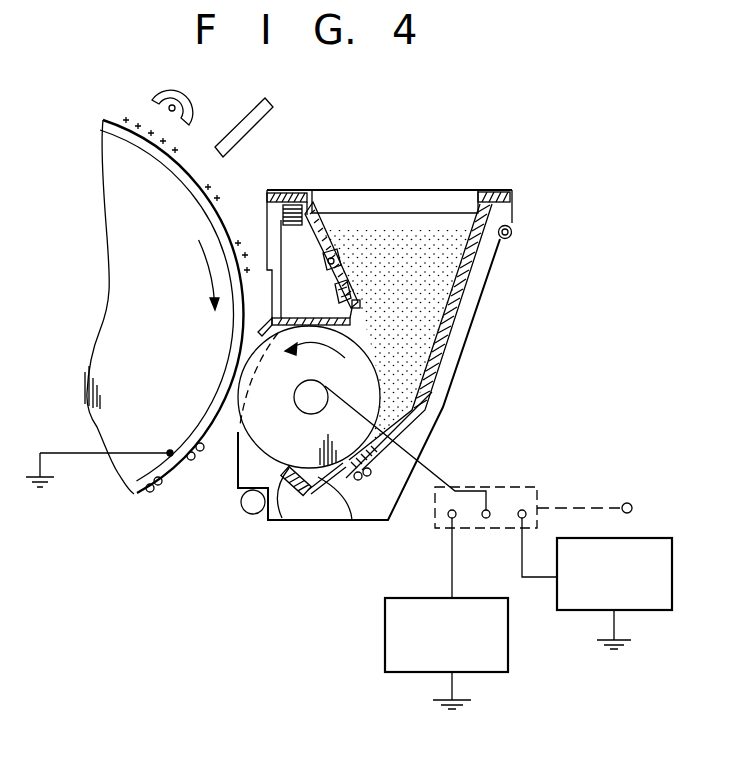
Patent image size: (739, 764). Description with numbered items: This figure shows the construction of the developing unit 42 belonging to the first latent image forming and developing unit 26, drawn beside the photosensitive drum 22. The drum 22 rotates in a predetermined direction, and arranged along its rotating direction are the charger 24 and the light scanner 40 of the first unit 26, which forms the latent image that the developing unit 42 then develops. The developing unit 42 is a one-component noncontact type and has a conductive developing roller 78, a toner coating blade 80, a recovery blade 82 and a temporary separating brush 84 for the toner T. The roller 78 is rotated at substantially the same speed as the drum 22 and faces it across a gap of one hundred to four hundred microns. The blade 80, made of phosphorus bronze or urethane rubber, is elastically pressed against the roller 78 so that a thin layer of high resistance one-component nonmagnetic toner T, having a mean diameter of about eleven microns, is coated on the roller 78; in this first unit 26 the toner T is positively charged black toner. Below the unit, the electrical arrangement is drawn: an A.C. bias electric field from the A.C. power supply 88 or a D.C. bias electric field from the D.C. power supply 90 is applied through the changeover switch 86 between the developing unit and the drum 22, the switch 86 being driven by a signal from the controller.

The photosensitive drum 22 is at (176, 466).
The charger 24 is at (194, 100).
The light scanner 40 is at (250, 120).
The first latent image forming and developing unit 26 is at (339, 164).
The toner T is at (437, 304).
The developing unit 42 is at (478, 336).
The toner coating blade 80 is at (368, 346).
The conductive developing roller 78 is at (322, 489).
The recovery blade 82 is at (282, 518).
The temporary separating brush 84 is at (352, 520).
The changeover switch 86 is at (522, 463).
The A.C. power supply 88 is at (656, 612).
The D.C. power supply 90 is at (510, 660).